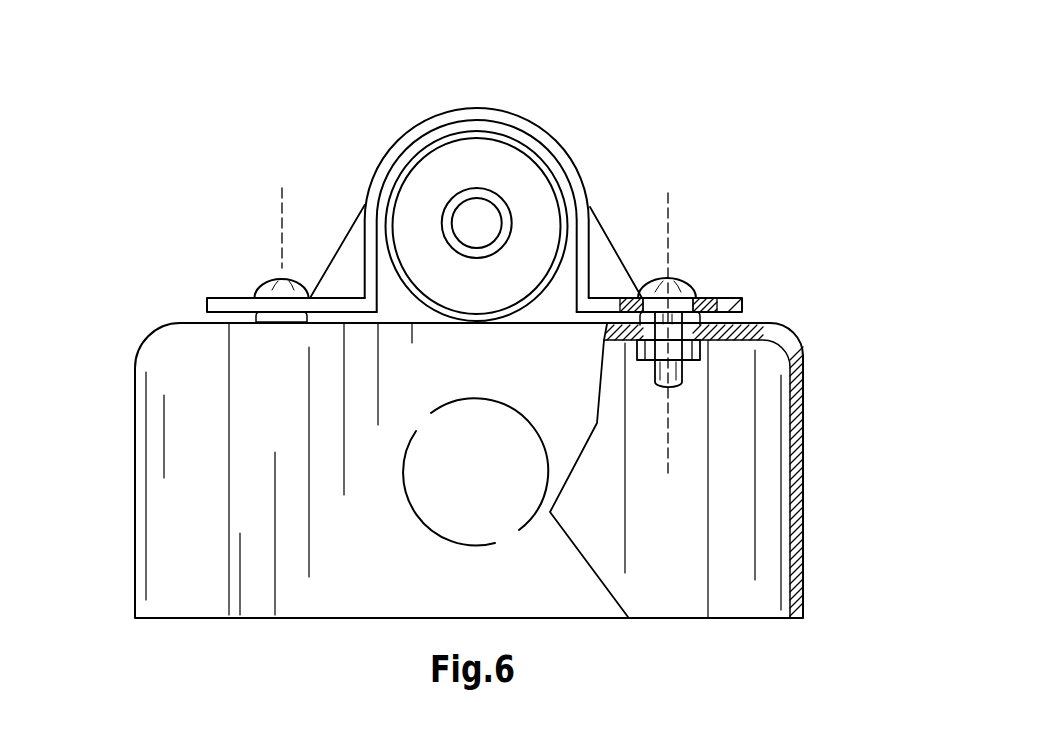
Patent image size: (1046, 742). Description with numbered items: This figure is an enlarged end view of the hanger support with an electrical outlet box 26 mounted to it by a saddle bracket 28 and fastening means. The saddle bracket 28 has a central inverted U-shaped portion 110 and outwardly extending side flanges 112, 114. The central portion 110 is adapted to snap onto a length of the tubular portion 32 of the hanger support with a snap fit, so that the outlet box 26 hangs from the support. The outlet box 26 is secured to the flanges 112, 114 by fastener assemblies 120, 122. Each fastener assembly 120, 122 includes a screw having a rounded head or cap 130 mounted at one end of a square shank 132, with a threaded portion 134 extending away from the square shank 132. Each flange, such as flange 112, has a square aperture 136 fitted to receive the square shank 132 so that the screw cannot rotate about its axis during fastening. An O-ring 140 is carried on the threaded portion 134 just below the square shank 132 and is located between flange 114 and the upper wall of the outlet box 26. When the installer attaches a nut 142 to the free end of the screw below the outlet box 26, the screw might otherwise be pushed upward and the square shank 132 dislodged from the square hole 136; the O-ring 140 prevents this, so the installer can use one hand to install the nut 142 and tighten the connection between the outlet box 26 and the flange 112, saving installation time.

The electrical outlet box 26 is at (175, 510).
The saddle bracket 28 is at (560, 117).
The tubular portion 32 is at (422, 301).
The central inverted U-shaped portion 110 is at (513, 110).
The side flange 112 is at (225, 303).
The side flange 114 is at (737, 300).
The fastener assembly 120 is at (270, 277).
The fastener assembly 122 is at (695, 277).
The rounded head 130 is at (682, 287).
The square shank 132 is at (657, 300).
The threaded portion 134 is at (637, 345).
The square aperture 136 is at (698, 302).
The O-ring 140 is at (643, 318).
The nut 142 is at (683, 348).